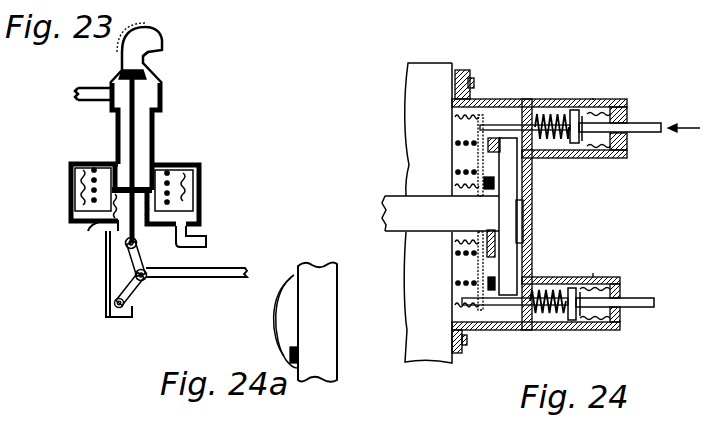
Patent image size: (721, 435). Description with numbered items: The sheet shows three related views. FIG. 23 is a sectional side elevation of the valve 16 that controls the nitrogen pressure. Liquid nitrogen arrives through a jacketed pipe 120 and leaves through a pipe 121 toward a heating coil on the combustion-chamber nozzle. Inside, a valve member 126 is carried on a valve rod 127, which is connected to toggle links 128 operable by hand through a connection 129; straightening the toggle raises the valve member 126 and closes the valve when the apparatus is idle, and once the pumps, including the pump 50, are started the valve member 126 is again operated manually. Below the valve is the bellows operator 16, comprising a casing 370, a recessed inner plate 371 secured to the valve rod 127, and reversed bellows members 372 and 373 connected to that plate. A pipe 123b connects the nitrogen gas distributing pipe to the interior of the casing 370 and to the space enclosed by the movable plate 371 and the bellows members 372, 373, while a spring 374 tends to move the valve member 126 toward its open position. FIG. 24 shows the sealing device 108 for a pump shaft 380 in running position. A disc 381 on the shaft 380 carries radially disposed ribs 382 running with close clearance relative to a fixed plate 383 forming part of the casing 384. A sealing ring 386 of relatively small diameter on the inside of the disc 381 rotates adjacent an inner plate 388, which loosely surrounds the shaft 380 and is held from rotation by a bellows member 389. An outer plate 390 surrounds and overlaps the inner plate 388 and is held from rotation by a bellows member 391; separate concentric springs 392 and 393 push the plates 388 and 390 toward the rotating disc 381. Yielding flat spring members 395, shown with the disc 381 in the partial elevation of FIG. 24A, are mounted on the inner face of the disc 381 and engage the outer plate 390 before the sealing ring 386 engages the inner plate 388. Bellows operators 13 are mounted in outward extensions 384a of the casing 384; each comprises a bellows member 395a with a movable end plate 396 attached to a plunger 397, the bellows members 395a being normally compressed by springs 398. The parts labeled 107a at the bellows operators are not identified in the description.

In FIG. 23, the jacketed pipe 120 is at (160, 38).
In FIG. 23, the valve member 126 is at (121, 75).
In FIG. 23, the valve 16 is at (52, 181).
In FIG. 23, the pipe 121 is at (92, 101).
In FIG. 23, the valve rod 127 is at (129, 143).
In FIG. 23, the recessed inner plate 371 is at (107, 188).
In FIG. 23, the reversed bellows member 372 is at (67, 198).
In FIG. 23, the casing 370 is at (202, 188).
In FIG. 23, the spring 374 is at (175, 172).
In FIG. 23, the reversed bellows member 373 is at (88, 230).
In FIG. 23, the pipe 123b is at (206, 240).
In FIG. 23, the toggle links 128 is at (128, 292).
In FIG. 23, the connection 129 is at (215, 303).
In FIG. 24A, the flat spring members 395 is at (293, 273).
In FIG. 24, the flat spring members 395 is at (490, 312).
In FIG. 24A, the disc 381 is at (328, 312).
In FIG. 24, the disc 381 is at (497, 215).
In FIG. 24, the pump 50 is at (405, 341).
In FIG. 24, the plunger 397 is at (446, 353).
In FIG. 24, the casing 384 is at (515, 92).
In FIG. 24, the fixed plate 383 is at (528, 182).
In FIG. 24, the outward extensions 384a is at (560, 330).
In FIG. 24, the sealing device 108 is at (490, 330).
In FIG. 24, the pump shaft 380 is at (390, 209).
In FIG. 24, the radially disposed ribs 382 is at (521, 229).
In FIG. 24, the sealing ring 386 is at (481, 267).
In FIG. 24, the bellows member 391 is at (456, 114).
In FIG. 24, the outer plate 390 is at (478, 128).
In FIG. 24, the spring 393 is at (458, 144).
In FIG. 24, the spring 392 is at (462, 170).
In FIG. 24, the bellows member 389 is at (478, 252).
In FIG. 24, the inner plate 388 is at (478, 262).
In FIG. 24, the springs 398 is at (553, 110).
In FIG. 24, the push rod 107a is at (655, 133).
In FIG. 24, the bellows members 395a is at (592, 150).
In FIG. 24, the movable end plates 396 is at (578, 140).
In FIG. 24, the bellows operators 13 is at (593, 98).